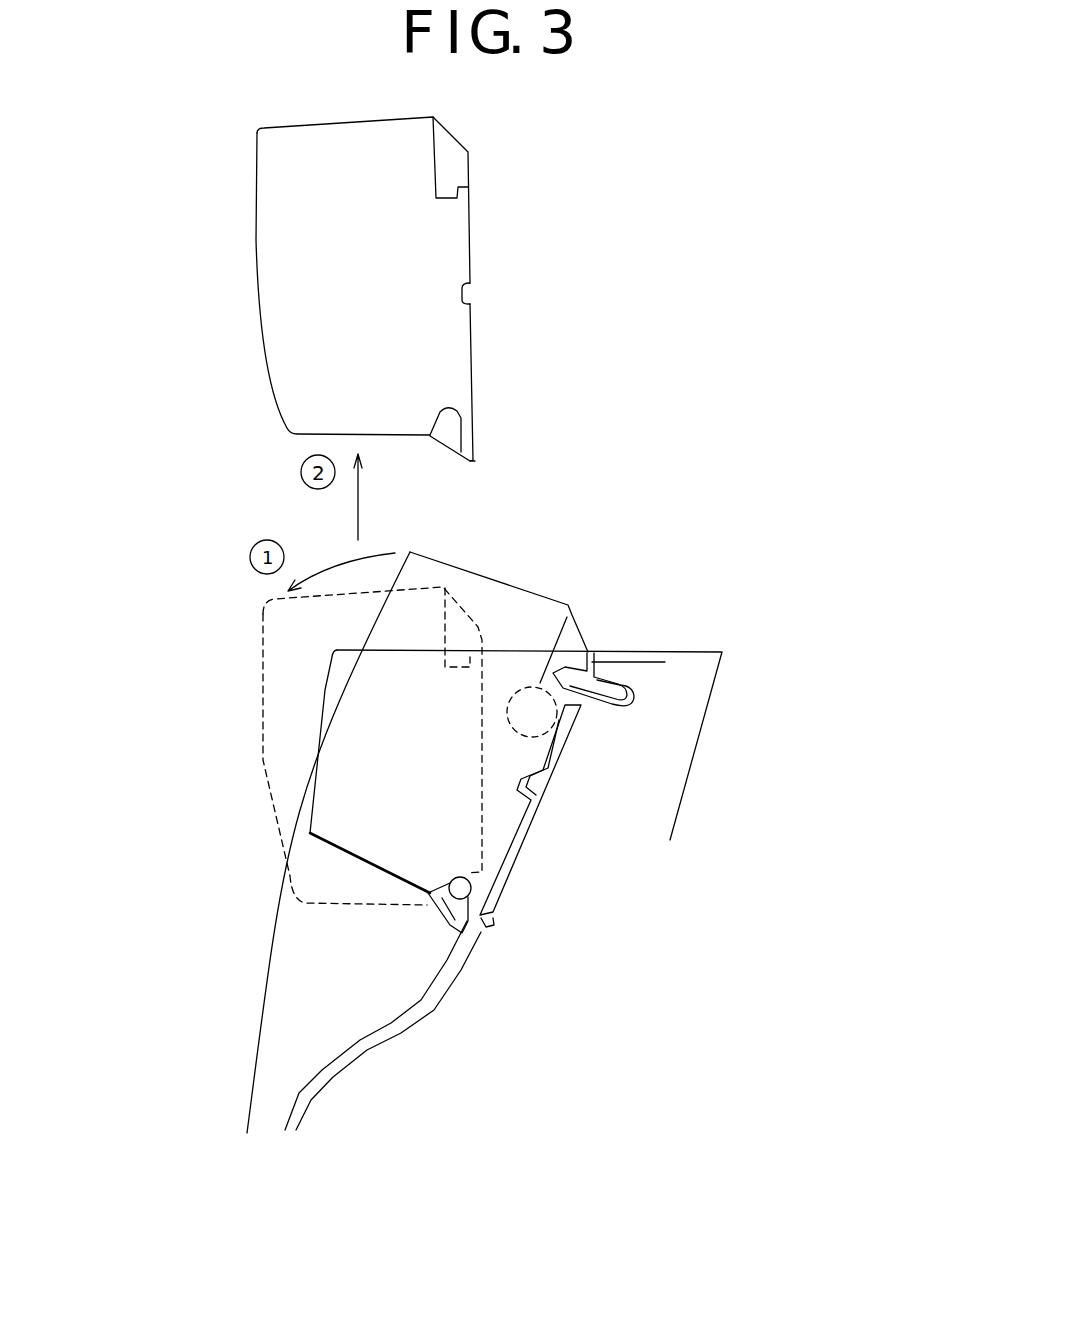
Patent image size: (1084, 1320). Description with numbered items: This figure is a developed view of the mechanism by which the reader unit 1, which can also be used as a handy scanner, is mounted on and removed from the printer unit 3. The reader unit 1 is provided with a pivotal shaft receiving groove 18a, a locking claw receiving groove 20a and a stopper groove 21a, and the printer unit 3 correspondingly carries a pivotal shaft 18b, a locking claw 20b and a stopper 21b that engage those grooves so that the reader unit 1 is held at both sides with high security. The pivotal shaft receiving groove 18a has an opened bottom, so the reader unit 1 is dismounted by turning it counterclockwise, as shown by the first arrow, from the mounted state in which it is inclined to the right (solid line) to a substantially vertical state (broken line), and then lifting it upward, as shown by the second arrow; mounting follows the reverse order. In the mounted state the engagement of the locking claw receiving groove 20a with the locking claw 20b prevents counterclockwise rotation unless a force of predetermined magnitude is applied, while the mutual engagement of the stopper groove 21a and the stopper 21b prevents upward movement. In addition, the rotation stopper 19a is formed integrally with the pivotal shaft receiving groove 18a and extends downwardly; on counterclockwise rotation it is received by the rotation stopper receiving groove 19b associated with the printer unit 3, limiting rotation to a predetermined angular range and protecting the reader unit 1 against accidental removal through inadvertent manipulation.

The reader unit 1 is at (254, 243).
The printer unit 3 is at (540, 890).
The pivotal shaft receiving groove 18a is at (447, 427).
The pivotal shaft 18b is at (442, 907).
The rotation stopper 19a is at (473, 445).
The rotation stopper receiving groove 19b is at (485, 930).
The locking claw receiving groove 20a is at (457, 172).
The locking claw 20b is at (580, 650).
The stopper groove 21a is at (471, 296).
The stopper 21b is at (537, 790).